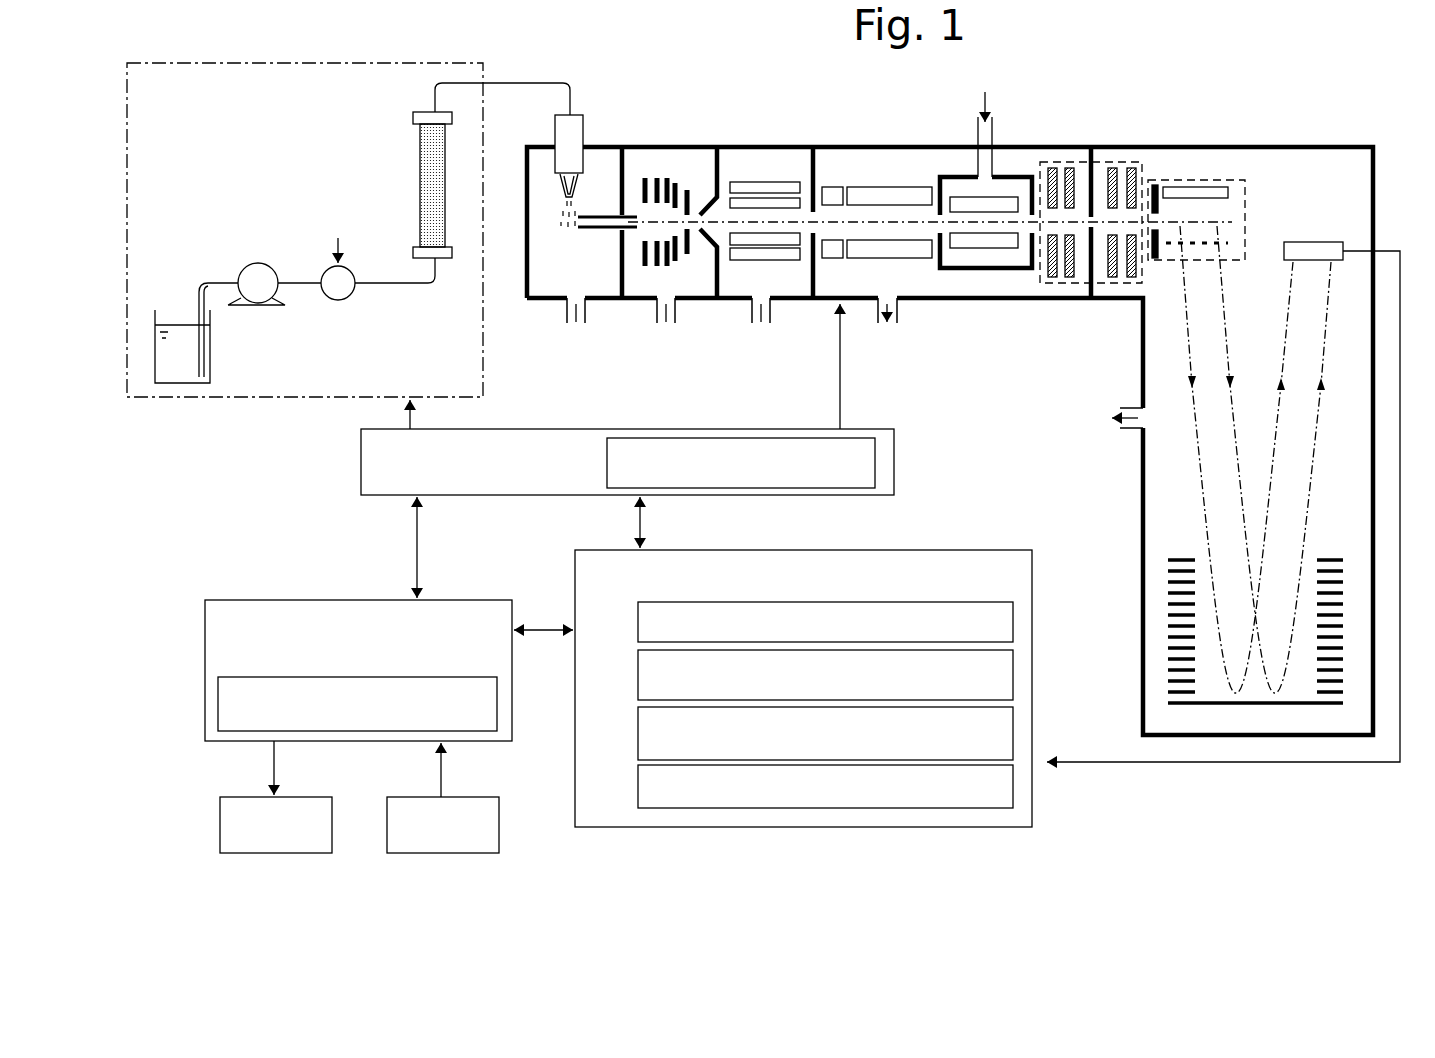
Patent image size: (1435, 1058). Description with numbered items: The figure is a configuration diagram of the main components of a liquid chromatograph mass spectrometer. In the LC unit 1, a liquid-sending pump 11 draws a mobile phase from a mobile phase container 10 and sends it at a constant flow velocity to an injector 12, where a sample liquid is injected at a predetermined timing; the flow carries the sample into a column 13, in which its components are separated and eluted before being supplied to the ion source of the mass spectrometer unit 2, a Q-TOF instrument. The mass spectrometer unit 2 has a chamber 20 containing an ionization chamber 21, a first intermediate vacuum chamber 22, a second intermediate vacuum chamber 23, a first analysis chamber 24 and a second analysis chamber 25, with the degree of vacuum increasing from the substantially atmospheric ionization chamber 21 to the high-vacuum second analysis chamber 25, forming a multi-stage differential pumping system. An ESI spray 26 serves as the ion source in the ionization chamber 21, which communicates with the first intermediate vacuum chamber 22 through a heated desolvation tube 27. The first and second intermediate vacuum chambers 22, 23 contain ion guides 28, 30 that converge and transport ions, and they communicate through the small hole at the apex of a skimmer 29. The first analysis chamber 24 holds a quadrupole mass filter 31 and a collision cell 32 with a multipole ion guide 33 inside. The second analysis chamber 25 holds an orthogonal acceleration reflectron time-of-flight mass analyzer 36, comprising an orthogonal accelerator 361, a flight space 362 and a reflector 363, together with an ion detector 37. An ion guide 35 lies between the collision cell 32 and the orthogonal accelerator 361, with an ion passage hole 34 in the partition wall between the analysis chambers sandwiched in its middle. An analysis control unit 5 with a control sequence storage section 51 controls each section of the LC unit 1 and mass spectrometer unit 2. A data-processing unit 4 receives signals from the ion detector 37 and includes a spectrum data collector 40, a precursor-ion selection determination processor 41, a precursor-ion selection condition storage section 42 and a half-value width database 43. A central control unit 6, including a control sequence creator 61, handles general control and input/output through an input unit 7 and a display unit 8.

The LC unit 1 is at (397, 59).
The mass spectrometer unit 2 is at (1302, 92).
The data-processing unit 4 is at (789, 688).
The analysis control unit 5 is at (633, 462).
The central control unit 6 is at (359, 670).
The input unit 7 is at (458, 855).
The display unit 8 is at (304, 853).
The mobile phase container 10 is at (210, 352).
The liquid-sending pump 11 is at (250, 266).
The injector 12 is at (326, 272).
The column 13 is at (420, 150).
The chamber 20 is at (828, 146).
The ionization chamber 21 is at (556, 291).
The first intermediate vacuum chamber 22 is at (646, 291).
The second intermediate vacuum chamber 23 is at (736, 291).
The first analysis chamber 24 is at (975, 291).
The second analysis chamber 25 is at (1112, 291).
The ESI spray 26 is at (578, 113).
The heated desolvation tube 27 is at (594, 216).
The ion guide 28 is at (668, 178).
The skimmer 29 is at (704, 198).
The ion guide 30 is at (770, 183).
The quadrupole mass filter 31 is at (865, 186).
The collision cell 32 is at (950, 176).
The multipole ion guide 33 is at (998, 196).
The ion passage hole 34 is at (1094, 218).
The ion guide 35 is at (1143, 146).
The orthogonal acceleration reflectron time-of-flight mass analyzer 36 is at (1216, 407).
The ion detector 37 is at (1343, 246).
The spectrum data collector 40 is at (638, 620).
The precursor-ion selection determination processor 41 is at (638, 668).
The precursor-ion selection condition storage section 42 is at (638, 727).
The half-value width database 43 is at (638, 784).
The control sequence storage section 51 is at (880, 456).
The control sequence creator 61 is at (497, 699).
The orthogonal accelerator 361 is at (1210, 180).
The flight space 362 is at (1275, 336).
The reflector 363 is at (1165, 577).